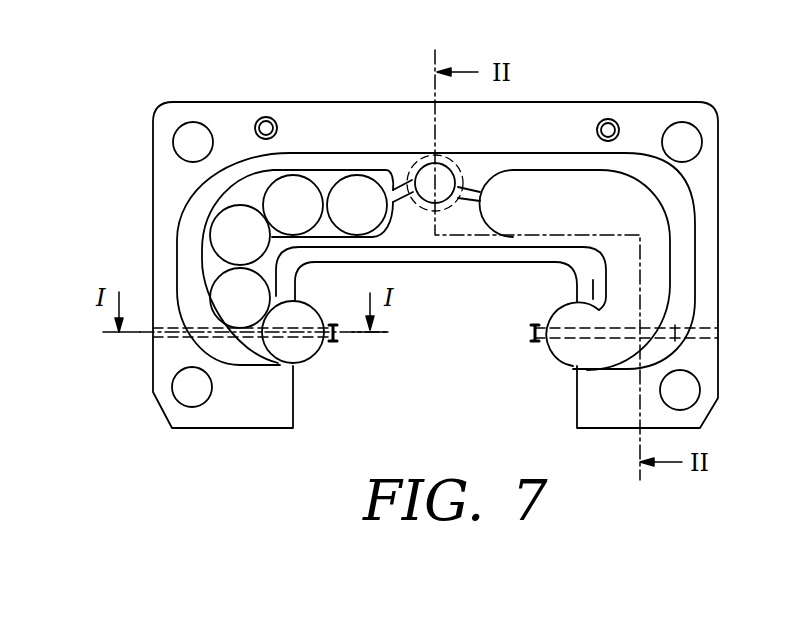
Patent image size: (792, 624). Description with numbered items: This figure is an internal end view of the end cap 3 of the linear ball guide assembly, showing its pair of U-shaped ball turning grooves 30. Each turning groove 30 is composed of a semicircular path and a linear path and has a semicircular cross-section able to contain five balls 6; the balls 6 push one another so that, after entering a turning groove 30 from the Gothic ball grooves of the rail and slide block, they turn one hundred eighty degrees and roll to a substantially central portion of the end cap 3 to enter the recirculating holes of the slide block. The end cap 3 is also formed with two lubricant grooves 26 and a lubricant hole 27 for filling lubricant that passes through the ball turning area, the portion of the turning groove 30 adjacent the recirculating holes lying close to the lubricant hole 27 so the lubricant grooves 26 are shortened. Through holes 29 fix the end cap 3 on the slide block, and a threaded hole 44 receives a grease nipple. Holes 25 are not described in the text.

The end cap 3 is at (228, 120).
The balls 6 is at (232, 235).
The threaded holes 25 is at (277, 120).
The lubricant grooves 26 is at (398, 185).
The lubricant hole 27 is at (418, 175).
The through holes 29 is at (188, 138).
The U-shaped ball turning grooves 30 is at (553, 193).
The threaded hole 44 is at (472, 180).